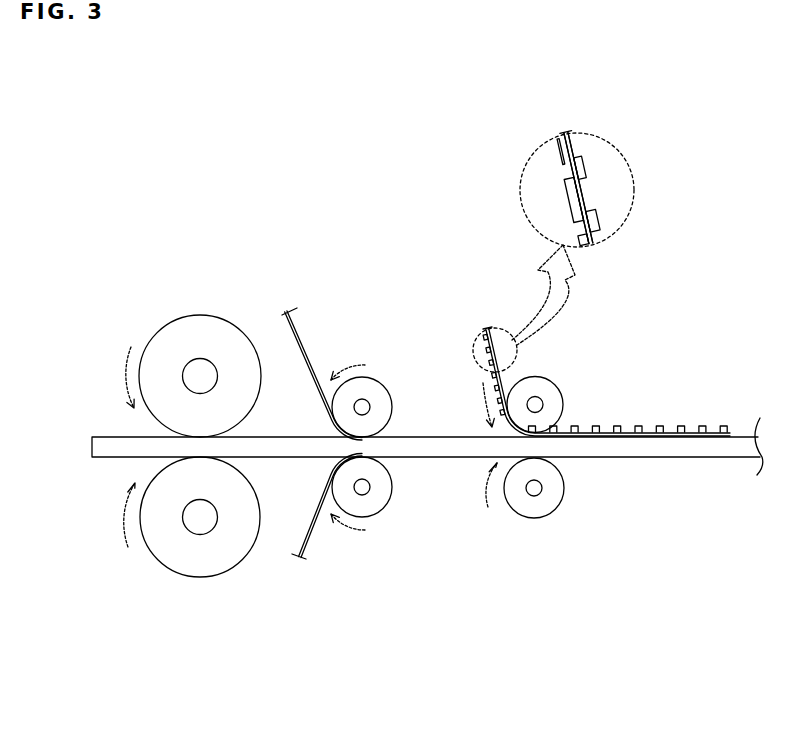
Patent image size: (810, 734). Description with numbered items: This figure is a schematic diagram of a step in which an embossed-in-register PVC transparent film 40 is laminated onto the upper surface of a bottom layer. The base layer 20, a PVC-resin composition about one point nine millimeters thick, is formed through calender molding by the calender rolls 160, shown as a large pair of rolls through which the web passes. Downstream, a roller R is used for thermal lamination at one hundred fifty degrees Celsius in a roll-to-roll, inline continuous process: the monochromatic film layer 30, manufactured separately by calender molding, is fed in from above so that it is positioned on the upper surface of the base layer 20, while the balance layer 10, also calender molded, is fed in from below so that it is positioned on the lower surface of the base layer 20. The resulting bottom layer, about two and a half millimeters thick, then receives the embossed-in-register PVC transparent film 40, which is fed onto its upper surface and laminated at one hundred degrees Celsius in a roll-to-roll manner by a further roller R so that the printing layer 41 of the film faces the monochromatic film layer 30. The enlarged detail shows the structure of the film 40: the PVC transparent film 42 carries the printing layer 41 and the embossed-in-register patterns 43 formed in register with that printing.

The balance layer 10 is at (313, 537).
The base layer 20 is at (92, 448).
The monochromatic film layer 30 is at (306, 340).
The embossed-in-register PVC transparent film 40 is at (483, 352).
The printing layer 41 is at (563, 191).
The PVC transparent film 42 is at (564, 134).
The embossed-in-register patterns 43 is at (586, 167).
The calender rolls 160 is at (167, 317).
The roller R is at (558, 492).